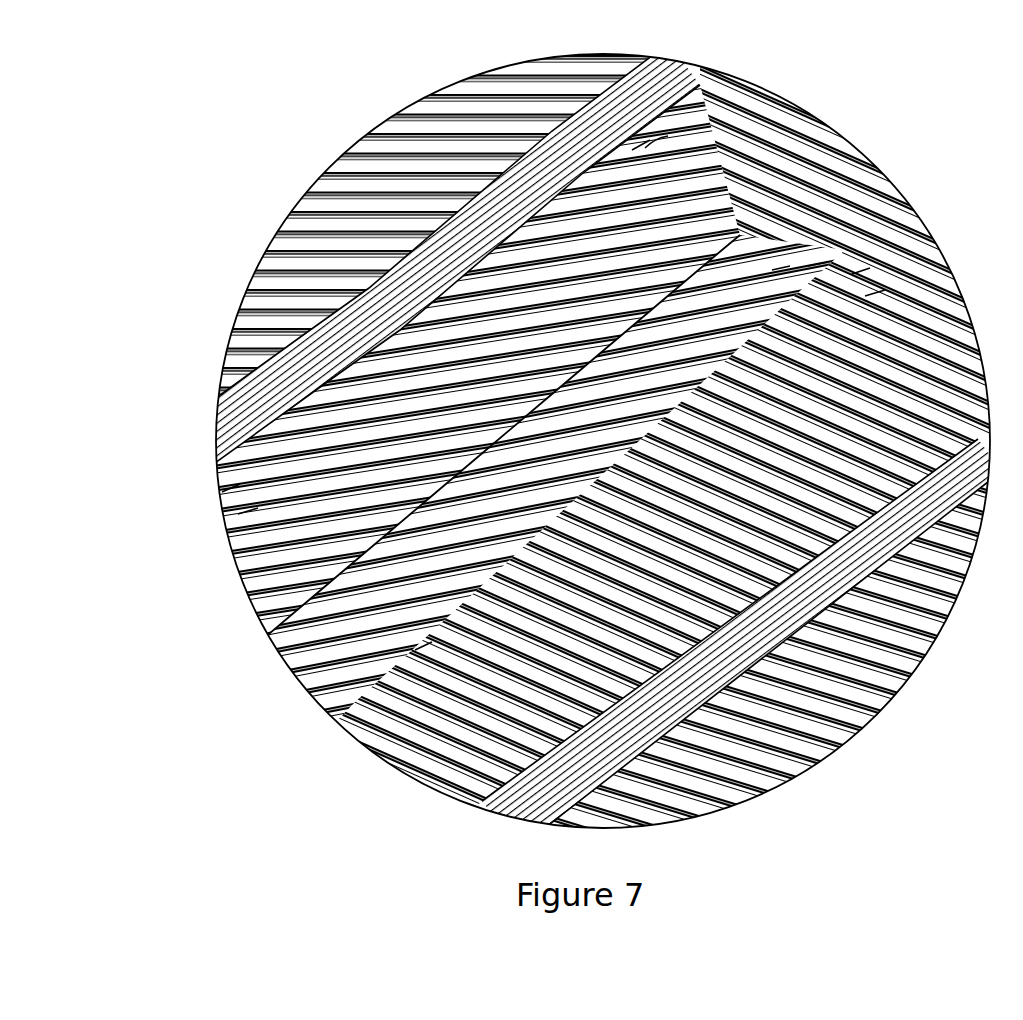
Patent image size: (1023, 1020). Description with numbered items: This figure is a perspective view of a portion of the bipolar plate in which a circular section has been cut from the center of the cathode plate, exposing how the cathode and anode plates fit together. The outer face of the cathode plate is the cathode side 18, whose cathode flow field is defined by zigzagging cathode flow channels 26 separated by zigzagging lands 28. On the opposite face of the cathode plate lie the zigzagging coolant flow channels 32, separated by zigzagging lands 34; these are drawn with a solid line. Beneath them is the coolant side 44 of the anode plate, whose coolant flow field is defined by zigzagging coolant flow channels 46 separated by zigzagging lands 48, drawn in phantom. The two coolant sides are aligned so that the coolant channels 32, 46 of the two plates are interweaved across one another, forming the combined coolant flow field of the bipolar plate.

The cathode side 18 is at (640, 147).
The cathode flow channels 26 is at (225, 514).
The lands 28 is at (224, 488).
The coolant flow channels 32 is at (780, 267).
The lands 34 is at (813, 263).
The coolant side 44 is at (420, 647).
The coolant flow channels 46 is at (870, 293).
The lands 48 is at (860, 270).